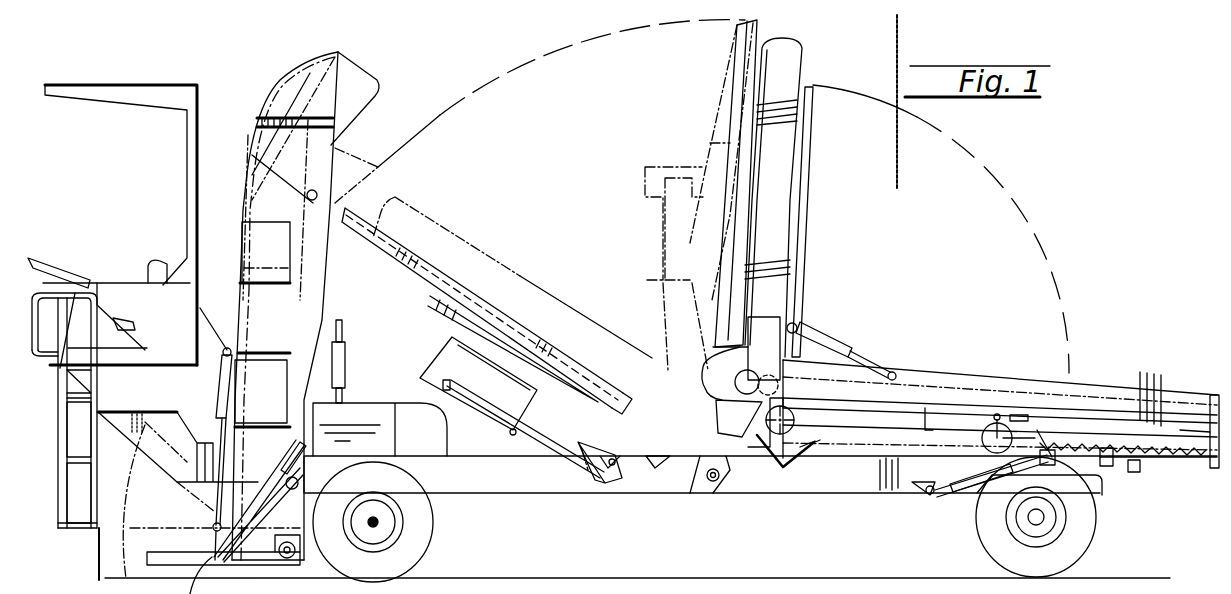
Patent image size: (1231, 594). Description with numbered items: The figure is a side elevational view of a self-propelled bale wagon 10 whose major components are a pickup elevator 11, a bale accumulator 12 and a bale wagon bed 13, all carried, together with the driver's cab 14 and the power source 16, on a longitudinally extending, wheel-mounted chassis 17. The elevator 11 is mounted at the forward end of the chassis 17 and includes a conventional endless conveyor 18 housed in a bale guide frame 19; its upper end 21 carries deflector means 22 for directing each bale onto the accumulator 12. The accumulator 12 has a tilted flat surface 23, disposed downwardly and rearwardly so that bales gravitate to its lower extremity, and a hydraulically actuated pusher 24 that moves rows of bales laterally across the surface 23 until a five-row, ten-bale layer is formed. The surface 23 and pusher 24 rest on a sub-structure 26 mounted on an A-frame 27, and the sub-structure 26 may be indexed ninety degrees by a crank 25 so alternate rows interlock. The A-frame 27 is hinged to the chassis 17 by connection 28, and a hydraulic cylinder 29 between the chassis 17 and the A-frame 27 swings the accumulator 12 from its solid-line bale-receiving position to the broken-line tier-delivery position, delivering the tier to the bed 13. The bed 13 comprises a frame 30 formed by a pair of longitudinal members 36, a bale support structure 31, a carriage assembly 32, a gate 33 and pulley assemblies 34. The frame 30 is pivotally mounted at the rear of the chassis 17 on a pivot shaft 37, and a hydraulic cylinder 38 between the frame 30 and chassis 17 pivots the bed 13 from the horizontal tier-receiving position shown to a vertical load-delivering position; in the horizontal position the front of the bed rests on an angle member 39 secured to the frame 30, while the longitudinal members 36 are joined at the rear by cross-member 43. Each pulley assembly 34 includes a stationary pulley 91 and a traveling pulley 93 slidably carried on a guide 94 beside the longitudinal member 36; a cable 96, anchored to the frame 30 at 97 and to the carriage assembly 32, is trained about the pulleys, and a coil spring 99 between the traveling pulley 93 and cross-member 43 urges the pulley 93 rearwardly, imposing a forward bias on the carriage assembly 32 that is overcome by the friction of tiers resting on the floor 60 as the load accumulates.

The self-propelled bale wagon 10 is at (456, 65).
The pickup elevator 11 is at (230, 266).
The bale accumulator 12 is at (466, 228).
The bale wagon bed 13 is at (908, 285).
The driver's cab 14 is at (80, 82).
The power source 16 is at (378, 425).
The chassis 17 is at (762, 478).
The endless conveyor 18 is at (318, 292).
The bale guide frame 19 is at (240, 301).
The upper end 21 is at (260, 118).
The deflector means 22 is at (296, 70).
The tilted flat surface 23 is at (474, 303).
The hydraulically actuated pusher 24 is at (518, 330).
The crank 25 is at (478, 414).
The sub-structure 26 is at (430, 296).
The A-frame 27 is at (580, 443).
The hinge connection 28 is at (714, 478).
The hydraulic cylinder 29 is at (658, 480).
The frame 30 is at (1198, 440).
The bale support structure 31 is at (1182, 396).
The carriage assembly 32 is at (708, 388).
The gate 33 is at (830, 246).
The pulley assembly 34 is at (980, 455).
The longitudinal member 36 is at (1177, 462).
The pivot shaft 37 is at (1108, 465).
The hydraulic cylinder 38 is at (976, 483).
The angle member 39 is at (820, 455).
The rear cross-member 43 is at (1216, 462).
The floor 60 is at (1125, 390).
The stationary pulley 91 is at (748, 398).
The traveling pulley 93 is at (988, 430).
The guide 94 is at (925, 408).
The cable 96 is at (858, 452).
The cable anchor 97 is at (1018, 416).
The coil spring 99 is at (1175, 462).